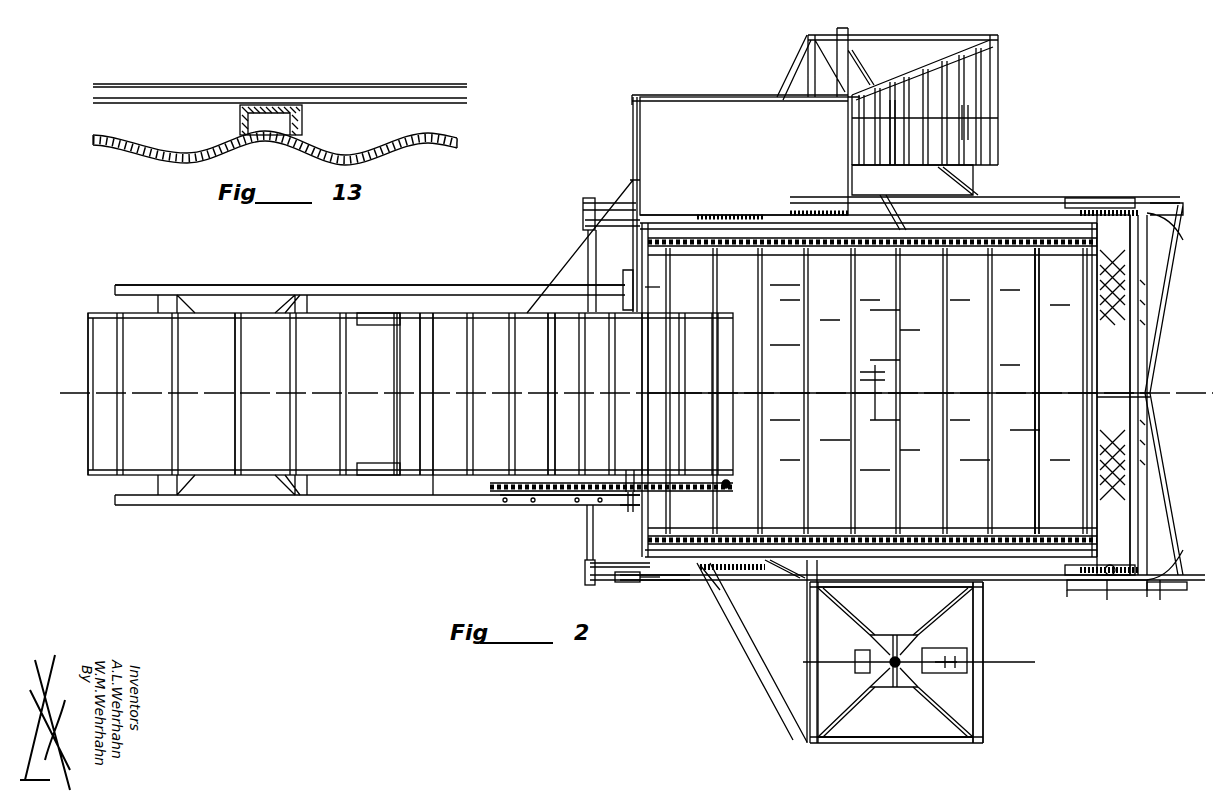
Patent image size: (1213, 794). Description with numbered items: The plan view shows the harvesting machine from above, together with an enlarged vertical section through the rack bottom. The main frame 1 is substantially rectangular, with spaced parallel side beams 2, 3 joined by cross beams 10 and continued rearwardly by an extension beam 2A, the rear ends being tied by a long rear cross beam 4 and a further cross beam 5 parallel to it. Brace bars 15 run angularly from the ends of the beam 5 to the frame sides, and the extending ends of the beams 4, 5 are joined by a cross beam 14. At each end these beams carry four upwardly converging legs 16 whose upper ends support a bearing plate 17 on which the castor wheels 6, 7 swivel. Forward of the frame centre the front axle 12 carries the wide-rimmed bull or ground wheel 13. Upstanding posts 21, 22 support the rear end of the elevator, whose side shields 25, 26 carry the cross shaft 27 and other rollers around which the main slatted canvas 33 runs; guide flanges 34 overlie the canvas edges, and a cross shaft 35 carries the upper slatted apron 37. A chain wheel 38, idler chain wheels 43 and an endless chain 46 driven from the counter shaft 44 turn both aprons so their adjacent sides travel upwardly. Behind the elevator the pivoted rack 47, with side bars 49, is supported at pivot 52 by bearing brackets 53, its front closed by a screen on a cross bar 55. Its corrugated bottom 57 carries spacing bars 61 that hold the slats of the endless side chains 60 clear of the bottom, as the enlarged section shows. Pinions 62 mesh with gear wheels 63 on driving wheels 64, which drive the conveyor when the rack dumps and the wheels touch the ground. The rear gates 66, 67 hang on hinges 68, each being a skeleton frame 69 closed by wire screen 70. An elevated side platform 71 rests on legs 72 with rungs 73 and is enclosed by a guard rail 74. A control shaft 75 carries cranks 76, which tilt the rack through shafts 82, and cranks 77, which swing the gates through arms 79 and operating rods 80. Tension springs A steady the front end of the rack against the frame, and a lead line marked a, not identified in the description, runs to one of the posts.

In FIG. 2, the main frame 1 is at (385, 505).
In FIG. 2, the side beam 2 is at (380, 290).
In FIG. 2, the extension beam 2A is at (410, 394).
In FIG. 2, the side beam 3 is at (255, 532).
In FIG. 2, the rear cross beam 4 is at (983, 630).
In FIG. 2, the cross beam 5 is at (807, 610).
In FIG. 2, the castor wheel 6 is at (955, 670).
In FIG. 2, the castor wheel 7 is at (965, 118).
In FIG. 2, the cross beam 10 is at (305, 298).
In FIG. 2, the front axle 12 is at (1144, 593).
In FIG. 2, the bull or ground wheel 13 is at (875, 395).
In FIG. 2, the cross beam 14 is at (925, 40).
In FIG. 2, the brace bar 15 is at (785, 80).
In FIG. 2, the leg 16 is at (945, 712).
In FIG. 2, the bearing plate 17 is at (860, 675).
In FIG. 2, the post 21 is at (630, 505).
In FIG. 2, the post 22 is at (630, 315).
In FIG. 2, the side shield 25 is at (403, 505).
In FIG. 2, the side shield 26 is at (445, 313).
In FIG. 2, the cross shaft 27 is at (117, 480).
In FIG. 2, the main slatted canvas 33 is at (222, 450).
In FIG. 2, the guide flange 34 is at (395, 313).
In FIG. 2, the cross shaft 35 is at (433, 505).
In FIG. 2, the upper slatted endless apron 37 is at (559, 394).
In FIG. 2, the chain wheel 38 is at (730, 486).
In FIG. 2, the idler chain wheel 43 is at (630, 472).
In FIG. 2, the counter shaft 44 is at (515, 480).
In FIG. 2, the endless chain 46 is at (565, 495).
In FIG. 2, the pivoted rack 47 is at (720, 482).
In FIG. 2, the side bar 49 is at (740, 560).
In FIG. 2, the pivot 52 is at (900, 220).
In FIG. 2, the bearing bracket 53 is at (905, 214).
In FIG. 2, the cross bar 55 is at (660, 287).
In FIG. 13, the corrugated sheet metal bottom 57 is at (193, 158).
In FIG. 2, the corrugated sheet metal bottom 57 is at (1018, 525).
In FIG. 13, the endless side chain 60 is at (213, 98).
In FIG. 2, the endless side chain 60 is at (1022, 240).
In FIG. 13, the spacing bar 61 is at (243, 118).
In FIG. 2, the spacing bar 61 is at (1063, 255).
In FIG. 2, the pinion 62 is at (1160, 222).
In FIG. 2, the gear wheel 63 is at (1095, 215).
In FIG. 2, the driving wheel 64 is at (1088, 197).
In FIG. 2, the gate 66 is at (1135, 496).
In FIG. 2, the gate 67 is at (1125, 315).
In FIG. 2, the hinge 68 is at (1112, 578).
In FIG. 2, the skeleton frame structure 69 is at (1140, 530).
In FIG. 2, the open meshed wire screen 70 is at (1128, 447).
In FIG. 2, the elevated side platform 71 is at (744, 156).
In FIG. 2, the leg 72 is at (968, 60).
In FIG. 2, the rung 73 is at (985, 95).
In FIG. 2, the guard rail 74 is at (690, 95).
In FIG. 2, the control shaft 75 is at (588, 545).
In FIG. 2, the crank 76 is at (615, 225).
In FIG. 2, the crank 77 is at (598, 200).
In FIG. 2, the outstanding arm 79 is at (1155, 205).
In FIG. 2, the operating rod 80 is at (1072, 198).
In FIG. 2, the shaft 82 is at (645, 220).
In FIG. 2, the tension spring A is at (740, 212).
In FIG. 2, the pole a is at (620, 185).